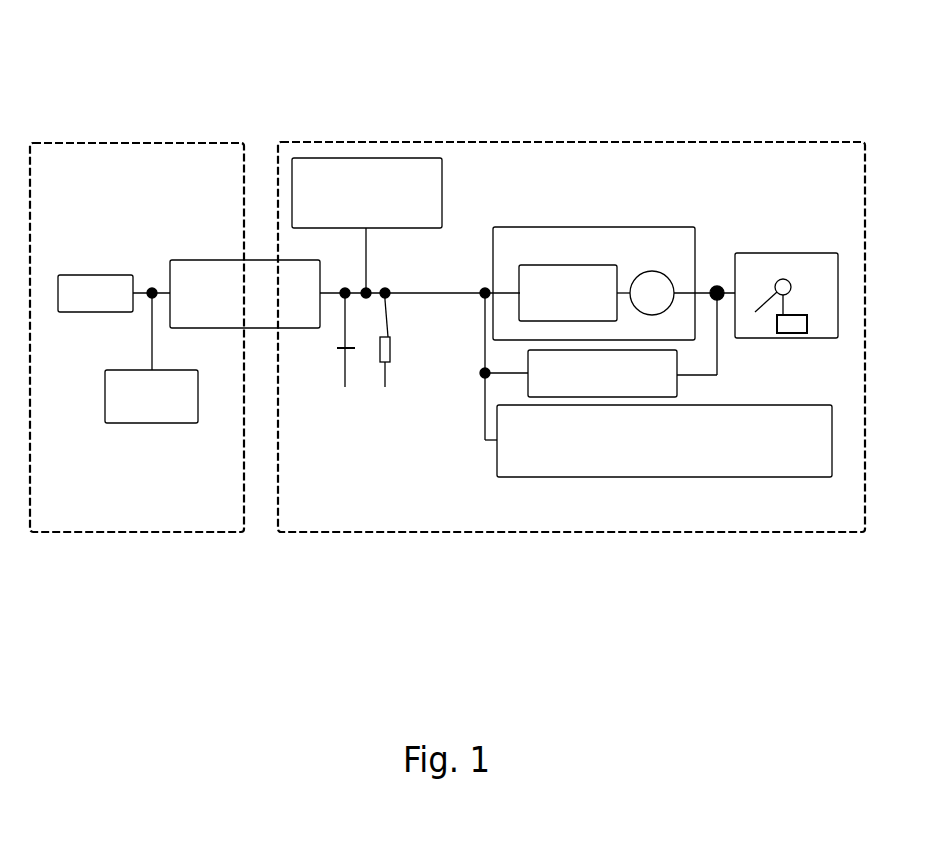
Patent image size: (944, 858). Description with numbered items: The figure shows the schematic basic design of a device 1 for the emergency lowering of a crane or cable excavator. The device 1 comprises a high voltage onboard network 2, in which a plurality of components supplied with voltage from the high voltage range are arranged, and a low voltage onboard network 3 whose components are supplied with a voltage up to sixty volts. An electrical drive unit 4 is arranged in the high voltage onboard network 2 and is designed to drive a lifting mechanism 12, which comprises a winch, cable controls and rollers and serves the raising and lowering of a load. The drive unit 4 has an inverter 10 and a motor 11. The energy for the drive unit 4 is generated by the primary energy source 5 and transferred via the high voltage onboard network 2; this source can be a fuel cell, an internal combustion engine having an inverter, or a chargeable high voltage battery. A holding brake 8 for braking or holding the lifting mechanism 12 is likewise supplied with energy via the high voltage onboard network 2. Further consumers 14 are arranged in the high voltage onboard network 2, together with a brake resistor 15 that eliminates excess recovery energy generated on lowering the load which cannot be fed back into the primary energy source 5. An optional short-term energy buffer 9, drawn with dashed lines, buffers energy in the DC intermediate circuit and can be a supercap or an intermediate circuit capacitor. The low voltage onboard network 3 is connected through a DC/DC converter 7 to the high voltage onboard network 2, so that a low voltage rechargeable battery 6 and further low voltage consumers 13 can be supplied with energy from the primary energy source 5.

The device 1 is at (443, 123).
The high voltage onboard network 2 is at (508, 532).
The low voltage onboard network 3 is at (120, 532).
The electrical drive unit 4 is at (605, 222).
The primary energy source 5 is at (352, 202).
The low voltage rechargeable battery 6 is at (87, 275).
The DC/DC converter 7 is at (234, 305).
The holding brake 8 is at (602, 386).
The high voltage onboard network energy buffer 9 is at (340, 350).
The inverter 10 is at (571, 304).
The motor 11 is at (649, 272).
The lifting mechanism 12 is at (792, 250).
The further low voltage consumers 13 is at (135, 409).
The further consumers 14 is at (635, 451).
The brake resistor 15 is at (392, 333).